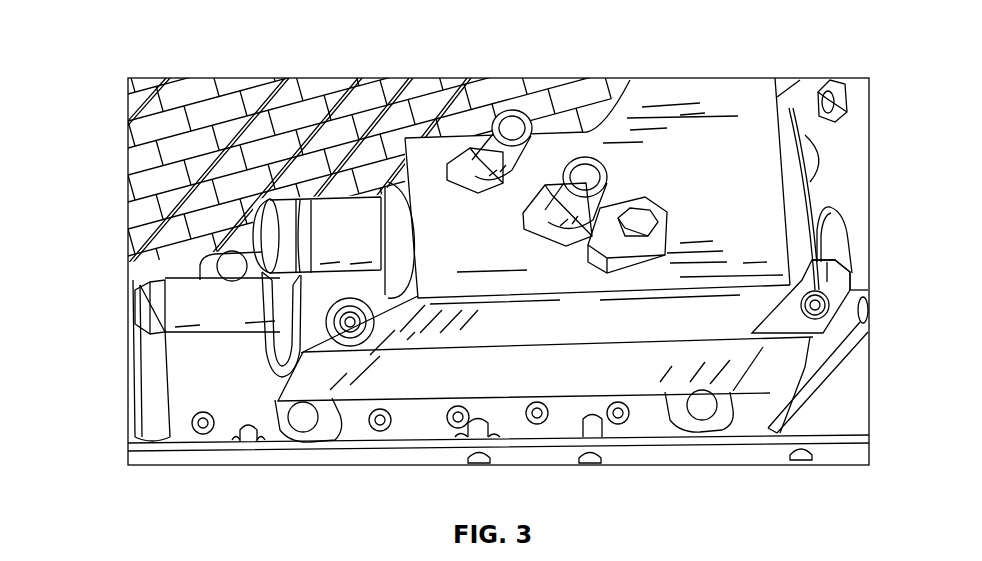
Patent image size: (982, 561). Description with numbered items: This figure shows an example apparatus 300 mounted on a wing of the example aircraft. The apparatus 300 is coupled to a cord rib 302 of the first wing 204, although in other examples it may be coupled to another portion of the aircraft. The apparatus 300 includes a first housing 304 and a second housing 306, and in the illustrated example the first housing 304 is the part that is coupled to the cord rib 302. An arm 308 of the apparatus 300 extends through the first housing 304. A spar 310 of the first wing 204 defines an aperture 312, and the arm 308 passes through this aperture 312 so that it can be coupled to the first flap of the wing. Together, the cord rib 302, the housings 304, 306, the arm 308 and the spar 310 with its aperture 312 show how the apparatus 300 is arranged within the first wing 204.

The apparatus 300 is at (742, 130).
The cord rib 302 is at (230, 422).
The first wing 204 is at (400, 457).
The second housing 306 is at (513, 325).
The first housing 304 is at (635, 372).
The arm 308 is at (827, 278).
The spar 310 is at (853, 130).
The aperture 312 is at (826, 222).